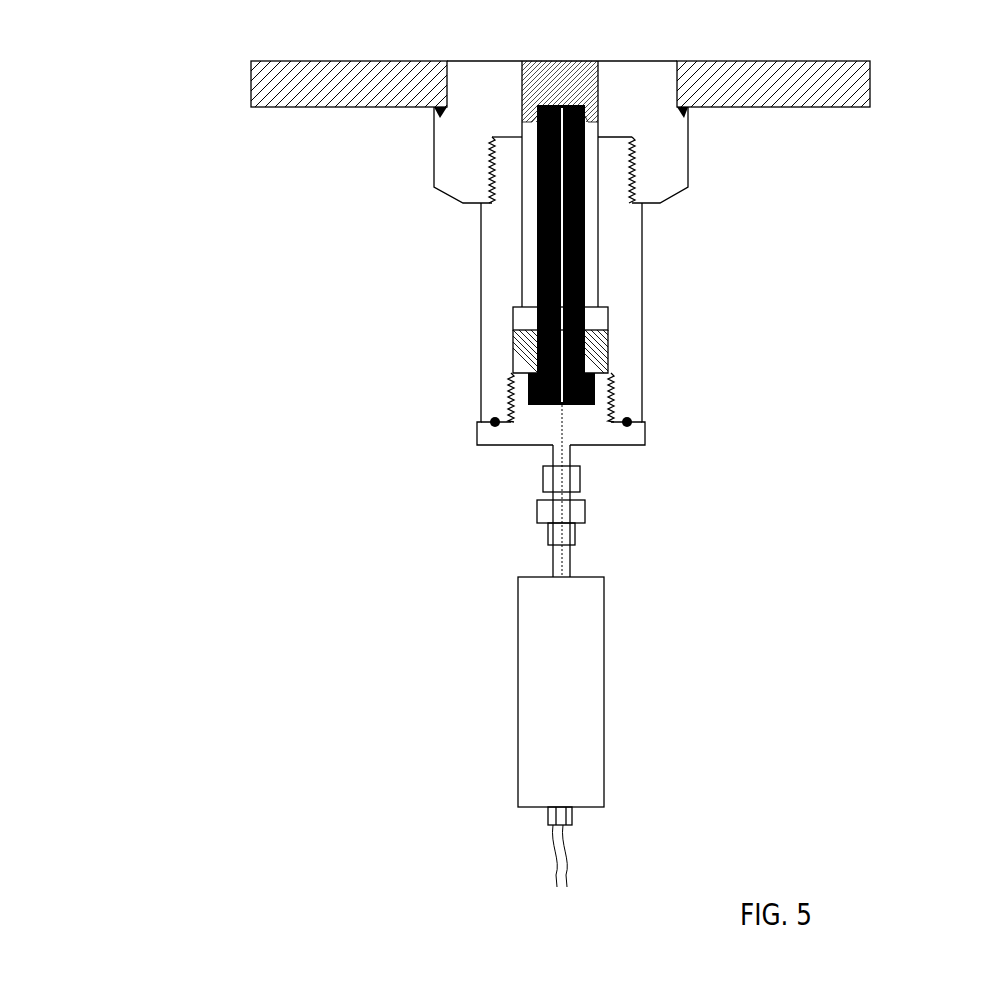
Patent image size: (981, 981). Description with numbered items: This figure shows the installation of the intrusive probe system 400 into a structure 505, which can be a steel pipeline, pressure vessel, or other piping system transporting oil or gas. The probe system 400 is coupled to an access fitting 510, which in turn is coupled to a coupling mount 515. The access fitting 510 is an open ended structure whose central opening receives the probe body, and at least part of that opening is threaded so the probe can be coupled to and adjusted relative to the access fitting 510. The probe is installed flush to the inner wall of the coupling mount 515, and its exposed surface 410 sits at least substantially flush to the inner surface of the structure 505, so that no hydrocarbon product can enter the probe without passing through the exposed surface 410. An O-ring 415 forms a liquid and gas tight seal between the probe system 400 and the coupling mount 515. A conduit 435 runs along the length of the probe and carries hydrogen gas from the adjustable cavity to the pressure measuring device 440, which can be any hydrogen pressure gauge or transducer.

The probe system 400 is at (170, 199).
The exposed surface 410 is at (578, 62).
The O-ring 415 is at (525, 72).
The conduit 435 is at (565, 332).
The pressure measuring device 440 is at (605, 650).
The structure 505 is at (740, 93).
The coupling mount 515 is at (665, 158).
The access fitting 510 is at (487, 290).